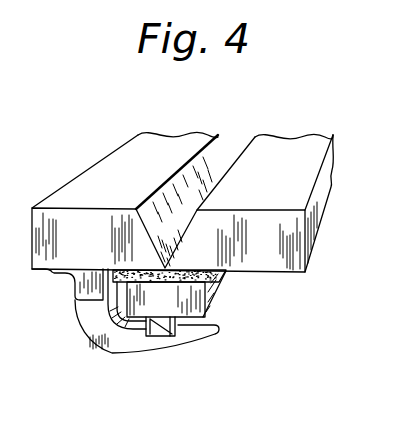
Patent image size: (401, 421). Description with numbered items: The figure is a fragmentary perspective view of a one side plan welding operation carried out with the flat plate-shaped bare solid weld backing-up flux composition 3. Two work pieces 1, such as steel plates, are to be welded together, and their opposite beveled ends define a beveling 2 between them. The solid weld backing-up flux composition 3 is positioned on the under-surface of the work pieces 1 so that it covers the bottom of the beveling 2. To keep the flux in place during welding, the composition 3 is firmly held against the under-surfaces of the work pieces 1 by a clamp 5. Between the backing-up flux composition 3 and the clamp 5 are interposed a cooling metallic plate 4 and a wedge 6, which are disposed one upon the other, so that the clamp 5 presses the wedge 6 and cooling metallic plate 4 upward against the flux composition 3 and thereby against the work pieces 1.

The work pieces 1 is at (67, 252).
The beveling 2 is at (188, 184).
The solid weld backing-up flux composition 3 is at (226, 276).
The cooling metallic plate 4 is at (193, 305).
The clamp 5 is at (95, 332).
The wedge 6 is at (174, 334).